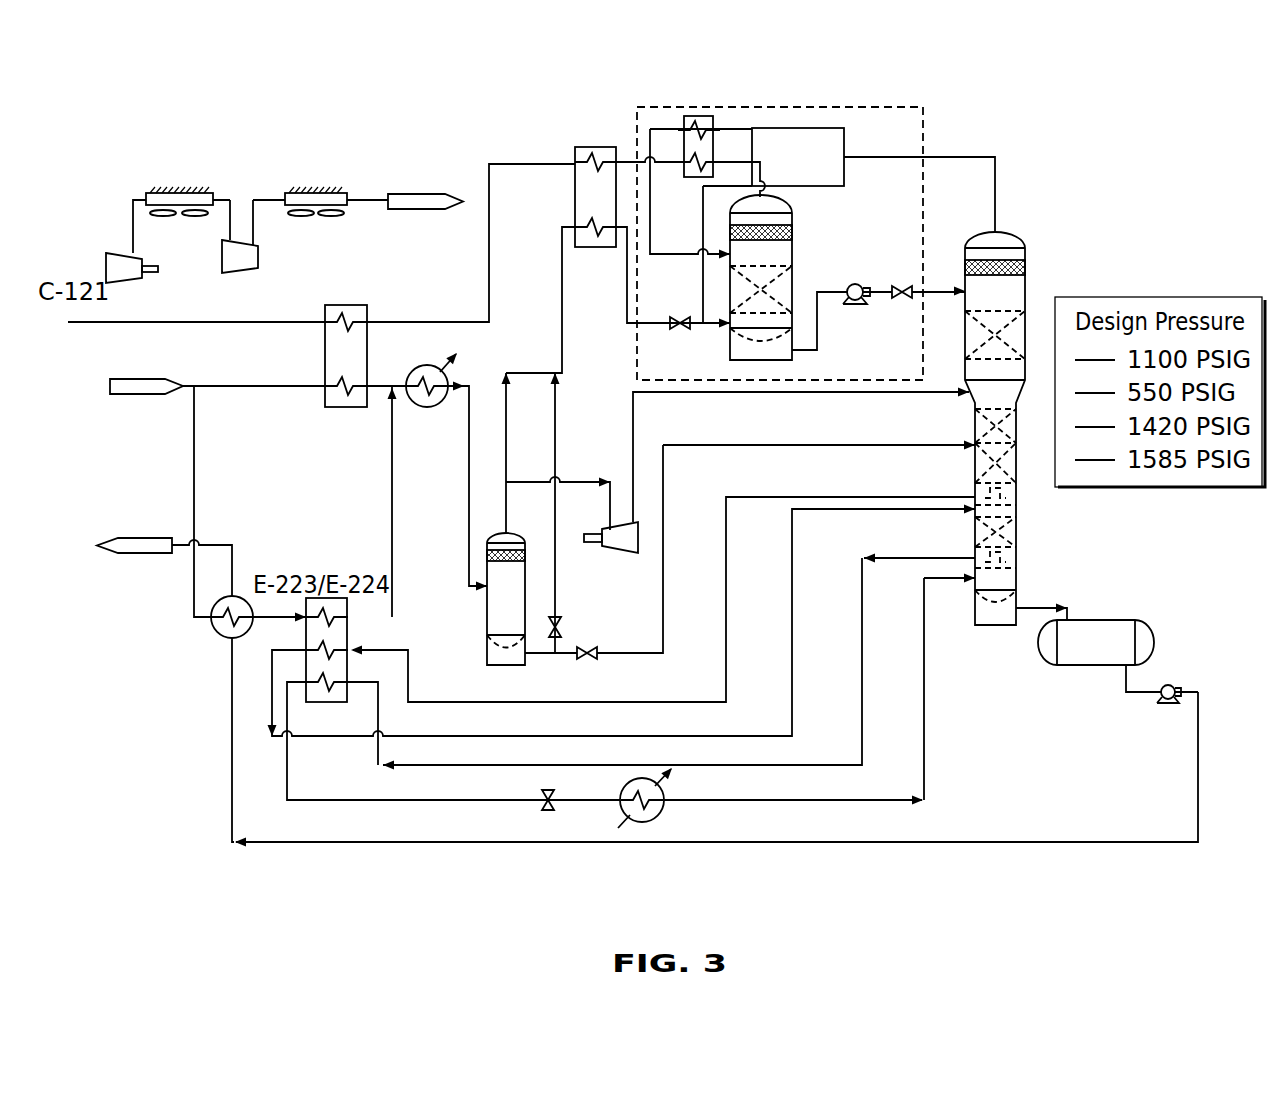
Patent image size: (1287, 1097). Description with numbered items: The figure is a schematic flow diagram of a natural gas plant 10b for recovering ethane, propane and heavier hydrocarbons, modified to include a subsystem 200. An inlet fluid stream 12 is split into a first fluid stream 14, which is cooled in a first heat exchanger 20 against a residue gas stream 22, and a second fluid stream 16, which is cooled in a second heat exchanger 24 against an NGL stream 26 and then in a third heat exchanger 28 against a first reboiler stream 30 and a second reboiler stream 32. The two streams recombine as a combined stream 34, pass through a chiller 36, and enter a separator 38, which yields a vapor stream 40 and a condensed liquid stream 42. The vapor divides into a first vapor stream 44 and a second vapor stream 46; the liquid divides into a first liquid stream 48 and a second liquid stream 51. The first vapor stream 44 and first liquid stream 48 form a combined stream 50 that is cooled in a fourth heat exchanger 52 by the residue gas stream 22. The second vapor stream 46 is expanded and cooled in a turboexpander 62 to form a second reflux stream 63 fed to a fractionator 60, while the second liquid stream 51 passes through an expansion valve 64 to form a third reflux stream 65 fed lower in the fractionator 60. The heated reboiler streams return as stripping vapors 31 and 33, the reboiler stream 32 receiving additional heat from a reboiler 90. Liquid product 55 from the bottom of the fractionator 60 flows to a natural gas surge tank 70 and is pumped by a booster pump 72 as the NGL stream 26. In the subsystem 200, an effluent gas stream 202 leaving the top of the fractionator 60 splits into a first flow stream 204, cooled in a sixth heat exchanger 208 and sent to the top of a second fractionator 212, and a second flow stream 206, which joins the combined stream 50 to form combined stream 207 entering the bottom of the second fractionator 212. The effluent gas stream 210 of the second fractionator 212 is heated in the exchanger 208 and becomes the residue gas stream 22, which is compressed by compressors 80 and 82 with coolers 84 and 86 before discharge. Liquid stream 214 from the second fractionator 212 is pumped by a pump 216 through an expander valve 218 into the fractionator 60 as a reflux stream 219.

The natural gas plant 10b is at (1068, 95).
The inlet fluid stream 12 is at (120, 380).
The first fluid stream 14 is at (282, 386).
The second fluid stream 16 is at (192, 478).
The first heat exchanger 20 is at (345, 305).
The residue gas stream 22 is at (218, 326).
The second heat exchanger 24 is at (225, 640).
The NGL stream 26 is at (130, 536).
The third heat exchanger 28 is at (300, 612).
The first reboiler stream 30 is at (878, 497).
The stripping vapor 31 is at (878, 511).
The second reboiler stream 32 is at (440, 768).
The stripping vapor 33 is at (926, 710).
The combined stream 34 is at (398, 382).
The chiller 36 is at (395, 412).
The separator 38 is at (485, 612).
The vapor stream 40 is at (508, 522).
The condensed liquid stream 42 is at (540, 660).
The first vapor stream 44 is at (508, 422).
The second vapor stream 46 is at (540, 480).
The first liquid stream 48 is at (560, 448).
The combined stream 50 is at (560, 302).
The second liquid stream 51 is at (660, 632).
The fourth heat exchanger 52 is at (580, 148).
The liquid product 55 is at (1050, 608).
The fractionator 60 is at (1028, 255).
The turboexpander 62 is at (606, 528).
The second reflux stream 63 is at (668, 394).
The expansion valve 64 is at (598, 660).
The third reflux stream 65 is at (858, 445).
The natural gas surge tank 70 is at (1105, 620).
The booster pump 72 is at (1178, 683).
The compressor 80 is at (108, 256).
The compressor 82 is at (260, 256).
The cooler 84 is at (148, 190).
The cooler 86 is at (288, 190).
The reboiler 90 is at (642, 823).
The subsystem 200 is at (840, 98).
The effluent gas stream 202 is at (990, 157).
The first flow stream 204 is at (755, 131).
The second flow stream 206 is at (846, 172).
The combined stream 207 is at (708, 328).
The sixth heat exchanger 208 is at (695, 116).
The effluent gas stream 210 is at (757, 160).
The second fractionator 212 is at (795, 220).
The liquid stream 214 is at (797, 355).
The pump 216 is at (849, 284).
The expander valve 218 is at (896, 300).
The reflux stream 219 is at (943, 288).